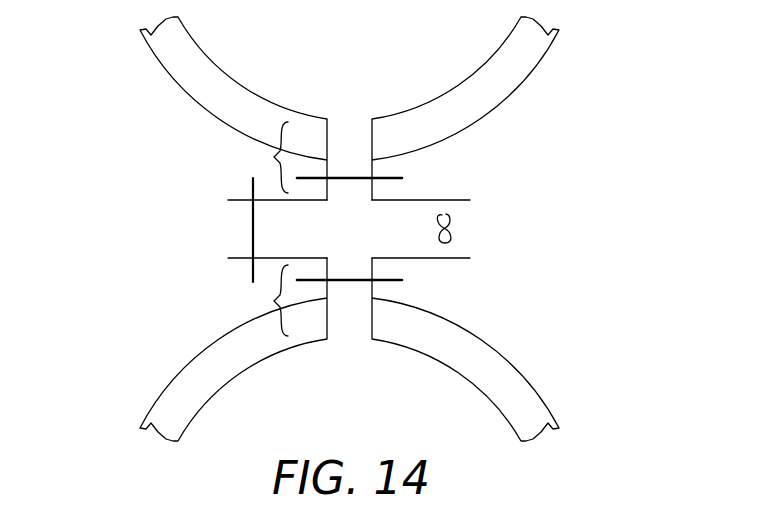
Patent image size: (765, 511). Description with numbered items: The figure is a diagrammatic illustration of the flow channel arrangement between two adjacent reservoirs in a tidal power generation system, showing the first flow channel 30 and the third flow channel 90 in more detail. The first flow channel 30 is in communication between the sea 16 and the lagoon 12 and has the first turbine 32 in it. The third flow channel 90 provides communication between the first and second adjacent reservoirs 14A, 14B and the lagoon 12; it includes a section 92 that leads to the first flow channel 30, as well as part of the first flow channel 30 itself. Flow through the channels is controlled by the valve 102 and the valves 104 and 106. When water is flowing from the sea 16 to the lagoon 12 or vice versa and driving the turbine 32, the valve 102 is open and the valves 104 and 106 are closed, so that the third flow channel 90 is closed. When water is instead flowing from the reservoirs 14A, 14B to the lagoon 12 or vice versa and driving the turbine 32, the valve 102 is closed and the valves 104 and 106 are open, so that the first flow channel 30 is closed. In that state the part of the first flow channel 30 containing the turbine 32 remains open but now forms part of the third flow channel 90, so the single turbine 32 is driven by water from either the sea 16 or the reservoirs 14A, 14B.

The lagoon 12 is at (644, 241).
The sea 16 is at (85, 241).
The first adjacent reservoir 14A is at (167, 384).
The second adjacent reservoir 14B is at (167, 74).
The first flow channel 30 is at (460, 199).
The first turbine 32 is at (455, 229).
The third flow channel 90 is at (372, 128).
The section of the third flow channel 92 is at (265, 229).
The valve 102 is at (250, 230).
The valve 104 is at (387, 177).
The valve 106 is at (387, 282).